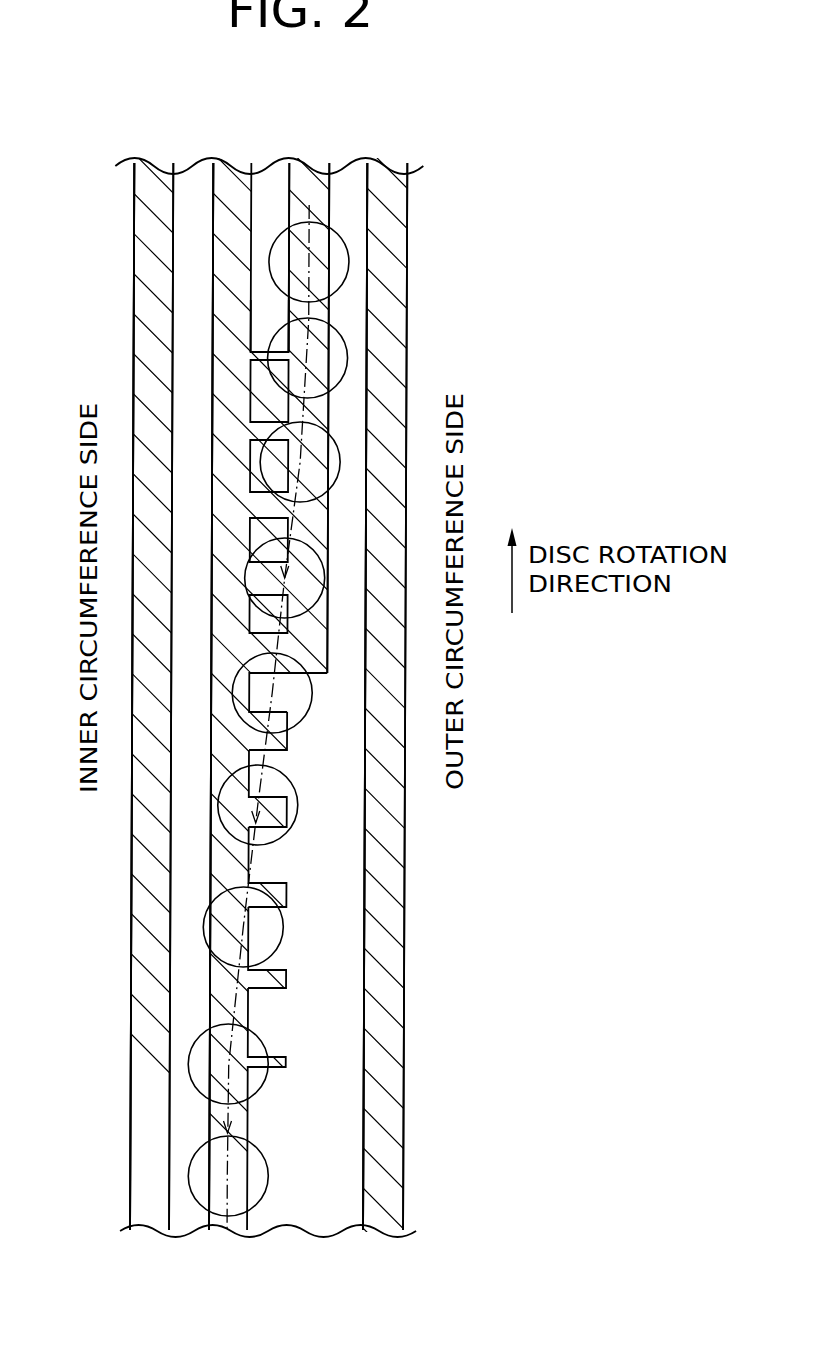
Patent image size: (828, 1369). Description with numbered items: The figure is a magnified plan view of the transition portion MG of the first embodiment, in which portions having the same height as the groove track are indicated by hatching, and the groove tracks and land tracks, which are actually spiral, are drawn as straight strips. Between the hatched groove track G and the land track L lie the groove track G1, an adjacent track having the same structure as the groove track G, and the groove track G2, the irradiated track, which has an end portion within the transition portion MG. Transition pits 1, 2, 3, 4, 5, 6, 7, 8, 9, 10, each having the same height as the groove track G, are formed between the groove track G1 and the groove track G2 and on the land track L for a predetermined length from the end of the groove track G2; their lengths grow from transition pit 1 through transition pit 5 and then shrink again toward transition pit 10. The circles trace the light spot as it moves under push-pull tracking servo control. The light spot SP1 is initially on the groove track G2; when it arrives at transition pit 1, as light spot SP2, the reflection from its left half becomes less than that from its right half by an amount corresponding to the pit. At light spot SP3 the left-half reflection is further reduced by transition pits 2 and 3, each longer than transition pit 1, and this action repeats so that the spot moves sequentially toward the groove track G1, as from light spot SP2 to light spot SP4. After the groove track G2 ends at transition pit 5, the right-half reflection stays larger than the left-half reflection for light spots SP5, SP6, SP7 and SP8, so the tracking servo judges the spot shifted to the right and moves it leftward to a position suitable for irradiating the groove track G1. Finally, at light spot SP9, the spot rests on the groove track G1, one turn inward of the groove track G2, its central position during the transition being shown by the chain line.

The transition pit 1 is at (263, 350).
The transition pit 2 is at (263, 421).
The transition pit 3 is at (260, 483).
The transition pit 4 is at (276, 553).
The transition pit 5 is at (276, 675).
The transition pit 6 is at (290, 741).
The transition pit 7 is at (290, 815).
The transition pit 8 is at (290, 892).
The transition pit 9 is at (290, 981).
The transition pit 10 is at (290, 1062).
The light spot SP1 is at (339, 234).
The light spot SP2 is at (338, 336).
The light spot SP3 is at (333, 443).
The light spot SP4 is at (320, 554).
The light spot SP5 is at (313, 687).
The light spot SP6 is at (299, 790).
The light spot SP7 is at (287, 929).
The light spot SP8 is at (263, 1088).
The light spot SP9 is at (273, 1176).
The land track L is at (423, 165).
The groove track G is at (386, 165).
The groove track G1 is at (234, 165).
The groove track G2 is at (314, 165).
The transition portion MG is at (329, 1249).